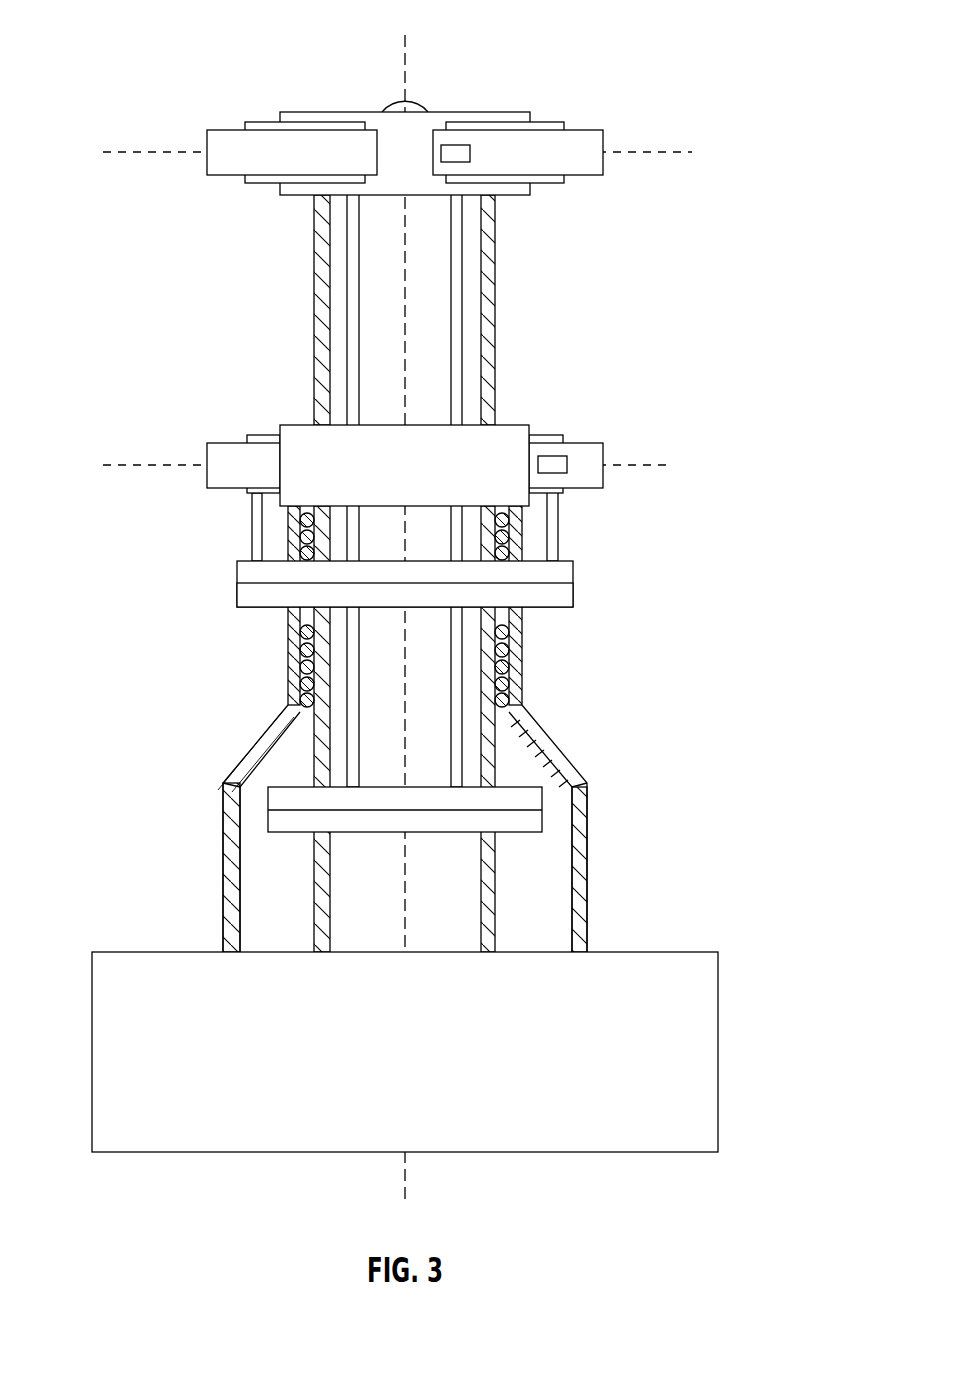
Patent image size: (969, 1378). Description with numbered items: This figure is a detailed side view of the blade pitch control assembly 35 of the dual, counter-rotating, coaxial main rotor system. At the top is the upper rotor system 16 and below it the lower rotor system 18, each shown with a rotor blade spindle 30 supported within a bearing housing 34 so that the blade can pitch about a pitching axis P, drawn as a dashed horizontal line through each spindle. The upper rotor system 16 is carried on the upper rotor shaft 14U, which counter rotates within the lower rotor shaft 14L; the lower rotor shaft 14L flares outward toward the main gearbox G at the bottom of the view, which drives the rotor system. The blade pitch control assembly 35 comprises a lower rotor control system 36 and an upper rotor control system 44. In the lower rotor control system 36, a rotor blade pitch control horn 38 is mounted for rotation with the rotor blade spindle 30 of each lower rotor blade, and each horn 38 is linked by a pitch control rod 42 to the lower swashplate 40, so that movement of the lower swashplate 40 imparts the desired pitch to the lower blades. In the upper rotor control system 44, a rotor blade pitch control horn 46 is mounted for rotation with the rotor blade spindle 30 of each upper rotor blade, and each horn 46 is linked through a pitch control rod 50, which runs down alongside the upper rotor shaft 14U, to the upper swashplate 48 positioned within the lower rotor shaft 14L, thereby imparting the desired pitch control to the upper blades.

The blade pitch control assembly 35 is at (708, 34).
The upper rotor system 16 is at (451, 135).
The lower rotor system 18 is at (478, 440).
The bearing housing 34 is at (306, 125).
The rotor blade spindle 30 is at (539, 142).
The rotor blade pitch control horn 46 is at (464, 147).
The rotor blade pitch control horn 38 is at (562, 456).
The pitch control rod 42 is at (561, 527).
The lower rotor control system 36 is at (446, 590).
The lower swashplate 40 is at (553, 600).
The upper rotor shaft 14U is at (486, 259).
The lower rotor shaft 14L is at (586, 809).
The upper rotor control system 44 is at (400, 729).
The pitch control rod 50 is at (463, 343).
The upper swashplate 48 is at (307, 825).
The pitching axis P is at (657, 153).
The main gearbox G is at (665, 1142).